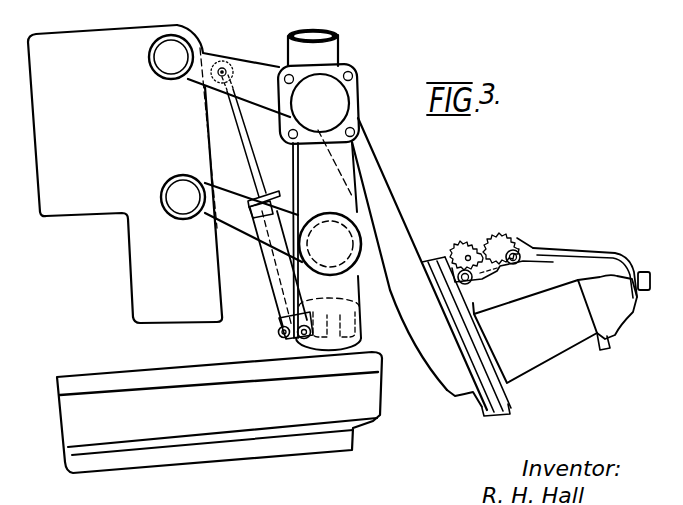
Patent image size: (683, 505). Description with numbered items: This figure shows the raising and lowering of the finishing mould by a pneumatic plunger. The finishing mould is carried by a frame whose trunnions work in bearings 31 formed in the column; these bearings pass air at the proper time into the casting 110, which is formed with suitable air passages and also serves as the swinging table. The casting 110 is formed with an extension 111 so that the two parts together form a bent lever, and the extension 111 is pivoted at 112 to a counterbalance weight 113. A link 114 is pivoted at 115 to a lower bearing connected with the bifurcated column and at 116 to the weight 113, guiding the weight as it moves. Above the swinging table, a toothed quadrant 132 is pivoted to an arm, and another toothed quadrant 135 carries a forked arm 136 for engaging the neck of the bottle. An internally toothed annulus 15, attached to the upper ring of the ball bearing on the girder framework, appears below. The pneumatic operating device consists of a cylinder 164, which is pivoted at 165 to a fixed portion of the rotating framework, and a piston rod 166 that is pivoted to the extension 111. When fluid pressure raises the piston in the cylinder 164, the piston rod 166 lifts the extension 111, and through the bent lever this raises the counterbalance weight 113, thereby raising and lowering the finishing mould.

The internally toothed annulus 15 is at (382, 362).
The bearings 31 is at (333, 88).
The casting 110 is at (382, 192).
The extension 111 is at (252, 68).
The pivot 112 is at (172, 47).
The weight 113 is at (125, 174).
The link 114 is at (243, 236).
The pivot 115 is at (330, 244).
The pivot 116 is at (183, 197).
The toothed quadrant 132 is at (466, 246).
The toothed quadrant 135 is at (520, 240).
The forked arm 136 is at (572, 251).
The cylinder 164 is at (270, 263).
The pivot 165 is at (287, 337).
The piston rod 166 is at (250, 164).